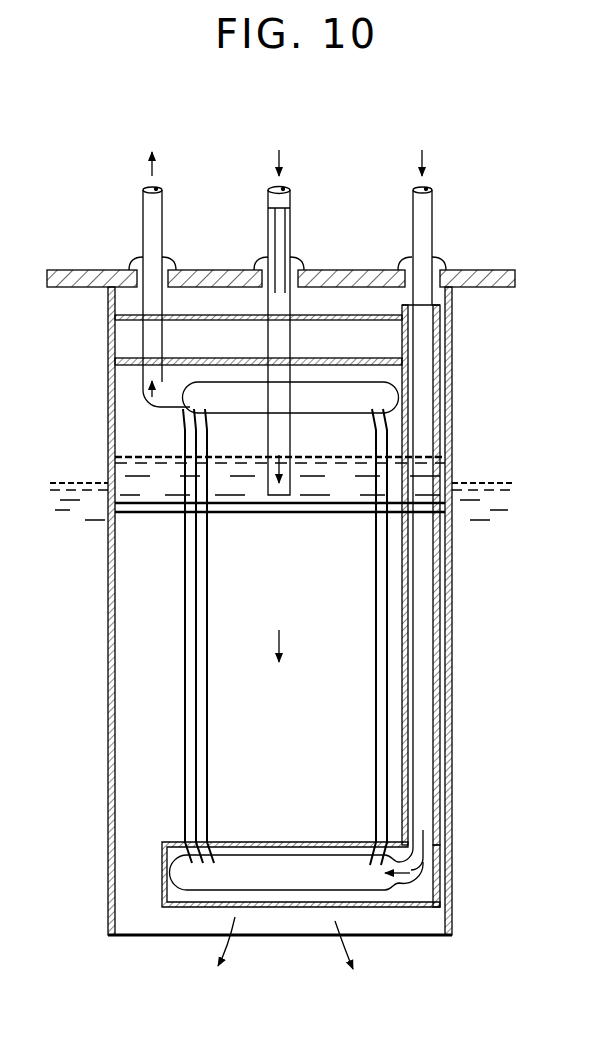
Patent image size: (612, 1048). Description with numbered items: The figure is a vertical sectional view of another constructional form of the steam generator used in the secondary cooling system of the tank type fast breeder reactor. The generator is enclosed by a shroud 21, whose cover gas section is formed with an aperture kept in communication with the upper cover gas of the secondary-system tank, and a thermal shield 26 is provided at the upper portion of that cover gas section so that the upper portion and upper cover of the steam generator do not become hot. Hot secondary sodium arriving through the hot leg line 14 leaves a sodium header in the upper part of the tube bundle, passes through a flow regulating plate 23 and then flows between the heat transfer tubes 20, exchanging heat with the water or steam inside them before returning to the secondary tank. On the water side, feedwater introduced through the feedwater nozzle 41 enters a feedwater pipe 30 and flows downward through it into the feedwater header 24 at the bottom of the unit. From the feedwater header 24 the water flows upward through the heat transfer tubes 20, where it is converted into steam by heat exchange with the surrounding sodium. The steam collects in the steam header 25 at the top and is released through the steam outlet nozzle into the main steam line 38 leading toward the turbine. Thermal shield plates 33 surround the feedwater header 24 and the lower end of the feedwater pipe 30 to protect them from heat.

The hot leg line 14 is at (291, 207).
The main steam line 38 is at (163, 205).
The feedwater nozzle 41 is at (433, 207).
The steam header 25 is at (226, 381).
The thermal shield 26 is at (131, 367).
The shroud 21 is at (110, 457).
The flow regulating plate 23 is at (253, 516).
The heat transfer tubes 20 is at (185, 712).
The feedwater pipe 30 is at (420, 748).
The feedwater header 24 is at (378, 893).
The thermal shield plates 33 is at (418, 907).